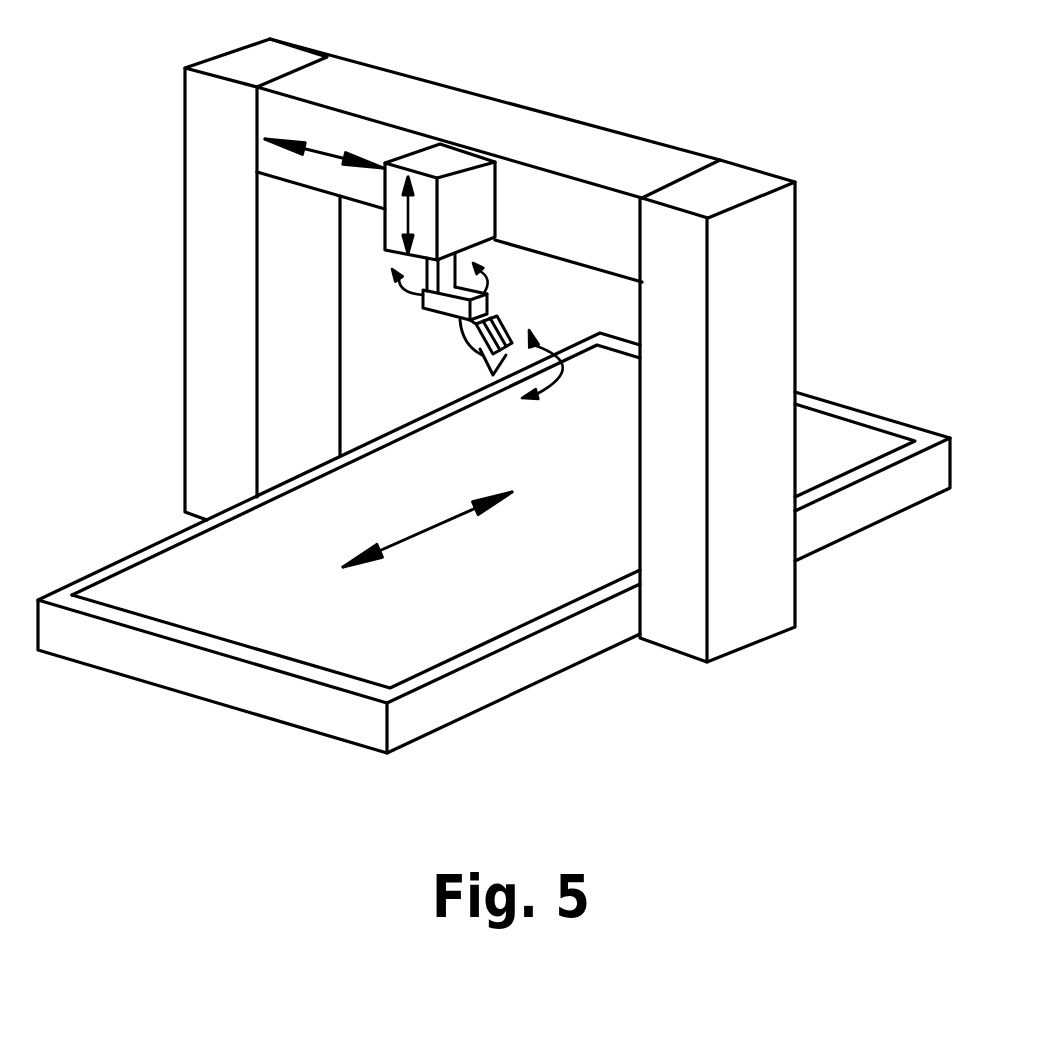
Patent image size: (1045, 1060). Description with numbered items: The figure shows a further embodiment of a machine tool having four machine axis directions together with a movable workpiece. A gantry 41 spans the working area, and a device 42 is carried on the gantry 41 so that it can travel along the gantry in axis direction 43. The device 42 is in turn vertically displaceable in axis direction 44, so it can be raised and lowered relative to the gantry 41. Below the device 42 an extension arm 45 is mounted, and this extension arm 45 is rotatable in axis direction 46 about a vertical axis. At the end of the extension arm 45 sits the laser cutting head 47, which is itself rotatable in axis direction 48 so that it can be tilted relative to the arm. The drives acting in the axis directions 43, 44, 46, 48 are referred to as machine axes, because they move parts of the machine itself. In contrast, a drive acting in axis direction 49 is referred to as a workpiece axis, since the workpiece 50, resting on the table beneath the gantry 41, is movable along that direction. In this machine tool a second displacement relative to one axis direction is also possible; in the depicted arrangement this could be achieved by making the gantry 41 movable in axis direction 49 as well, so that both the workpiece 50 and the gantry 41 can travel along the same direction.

The gantry 41 is at (595, 150).
The device 42 is at (414, 291).
The axis direction 43 is at (330, 148).
The axis direction 44 is at (437, 213).
The extension arm 45 is at (424, 306).
The axis direction 46 is at (458, 320).
The laser cutting head 47 is at (487, 345).
The axis direction 48 is at (557, 345).
The axis direction 49 is at (427, 530).
The workpiece 50 is at (433, 643).